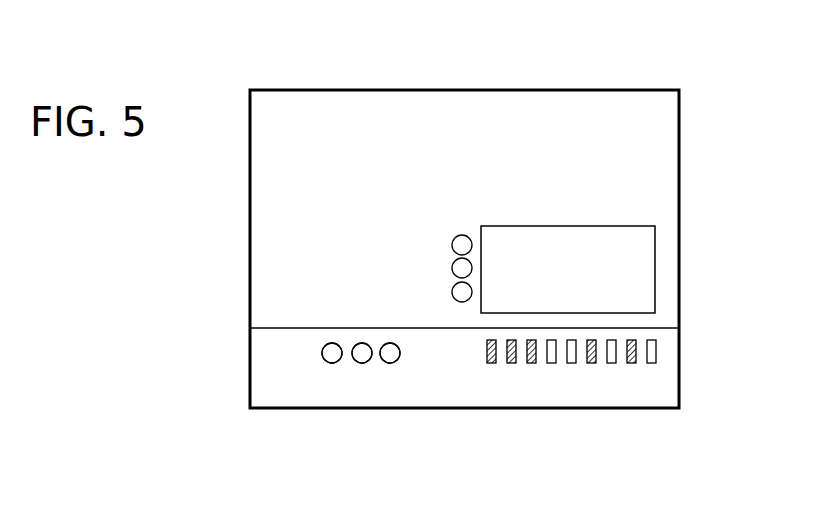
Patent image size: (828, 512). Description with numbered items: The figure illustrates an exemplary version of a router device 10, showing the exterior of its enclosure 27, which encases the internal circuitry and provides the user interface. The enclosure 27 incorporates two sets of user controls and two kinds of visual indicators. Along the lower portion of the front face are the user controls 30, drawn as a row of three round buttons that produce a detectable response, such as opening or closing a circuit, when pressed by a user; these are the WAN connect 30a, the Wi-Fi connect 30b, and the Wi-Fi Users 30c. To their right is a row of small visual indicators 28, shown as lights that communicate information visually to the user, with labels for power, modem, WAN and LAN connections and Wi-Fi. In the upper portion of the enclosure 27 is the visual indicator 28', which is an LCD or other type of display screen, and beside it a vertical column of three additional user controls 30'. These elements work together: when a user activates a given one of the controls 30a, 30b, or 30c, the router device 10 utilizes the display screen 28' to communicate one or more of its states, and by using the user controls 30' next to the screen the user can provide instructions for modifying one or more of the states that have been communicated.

The router device 10 is at (378, 90).
The enclosure 27 is at (680, 194).
The visual indicators 28 is at (580, 399).
The visual indicator 28' is at (568, 254).
The user controls 30 is at (329, 397).
The WAN connect 30a is at (332, 343).
The Wi-Fi connect 30b is at (362, 343).
The Wi-Fi Users 30c is at (390, 343).
The user controls 30' is at (427, 249).